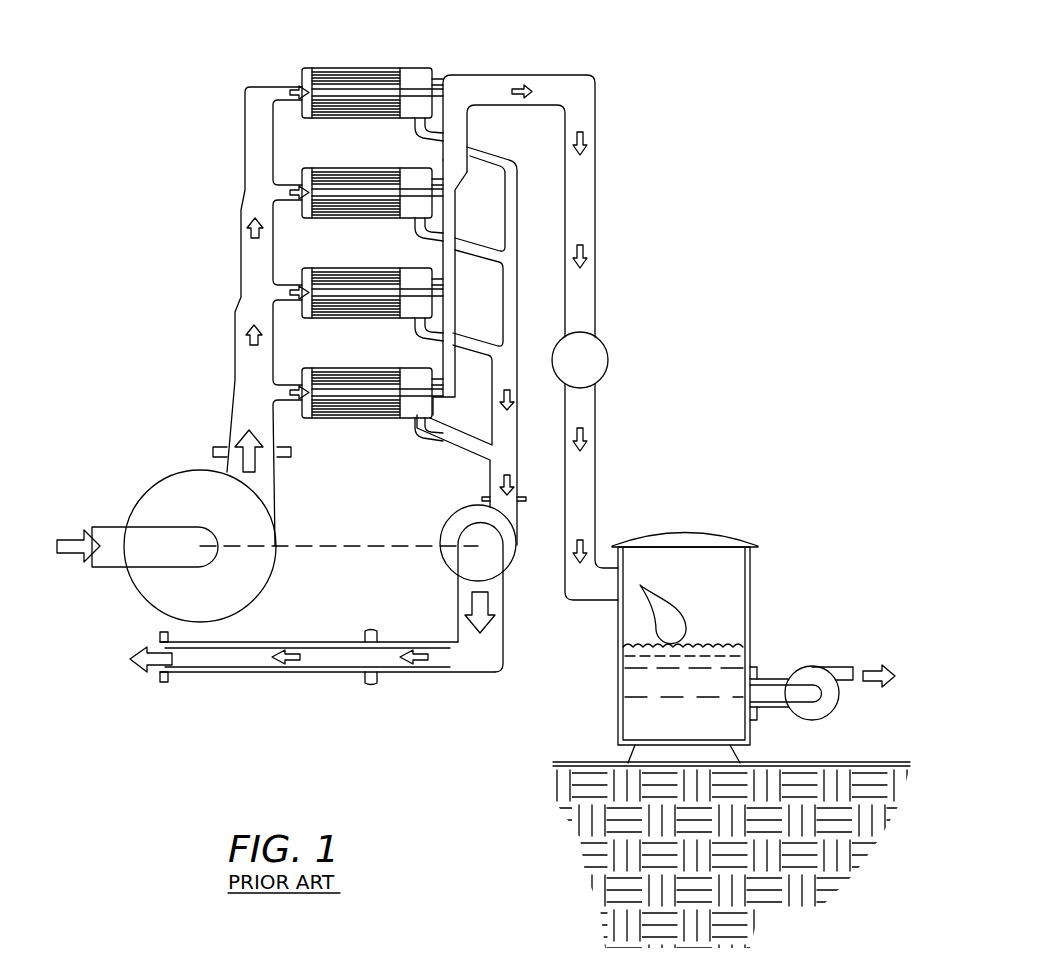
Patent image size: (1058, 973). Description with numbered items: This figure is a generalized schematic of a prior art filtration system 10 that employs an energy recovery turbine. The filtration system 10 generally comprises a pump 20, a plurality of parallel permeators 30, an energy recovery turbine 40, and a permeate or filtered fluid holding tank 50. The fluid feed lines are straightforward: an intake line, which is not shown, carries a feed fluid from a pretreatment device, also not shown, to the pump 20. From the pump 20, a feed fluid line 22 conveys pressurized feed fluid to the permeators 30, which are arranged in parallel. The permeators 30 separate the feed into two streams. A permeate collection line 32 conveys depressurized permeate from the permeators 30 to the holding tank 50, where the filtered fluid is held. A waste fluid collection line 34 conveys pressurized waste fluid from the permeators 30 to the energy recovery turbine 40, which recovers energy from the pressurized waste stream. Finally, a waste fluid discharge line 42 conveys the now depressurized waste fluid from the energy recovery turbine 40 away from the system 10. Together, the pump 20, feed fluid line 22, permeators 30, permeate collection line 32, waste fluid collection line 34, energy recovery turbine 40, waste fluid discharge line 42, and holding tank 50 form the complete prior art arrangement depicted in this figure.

The filtration system 10 is at (685, 110).
The pump 20 is at (150, 487).
The feed fluid line 22 is at (235, 370).
The permeators 30 is at (298, 78).
The permeate collection line 32 is at (598, 467).
The waste fluid collection line 34 is at (596, 296).
The energy recovery turbine 40 is at (450, 520).
The waste fluid discharge line 42 is at (303, 640).
The holding tank 50 is at (703, 530).